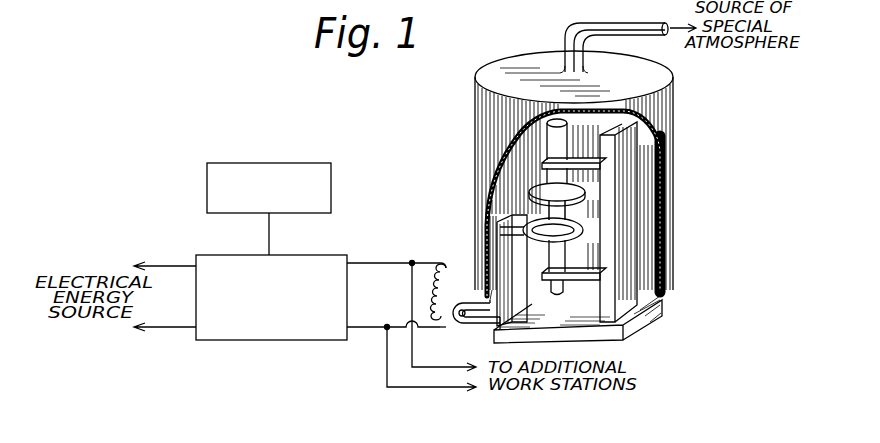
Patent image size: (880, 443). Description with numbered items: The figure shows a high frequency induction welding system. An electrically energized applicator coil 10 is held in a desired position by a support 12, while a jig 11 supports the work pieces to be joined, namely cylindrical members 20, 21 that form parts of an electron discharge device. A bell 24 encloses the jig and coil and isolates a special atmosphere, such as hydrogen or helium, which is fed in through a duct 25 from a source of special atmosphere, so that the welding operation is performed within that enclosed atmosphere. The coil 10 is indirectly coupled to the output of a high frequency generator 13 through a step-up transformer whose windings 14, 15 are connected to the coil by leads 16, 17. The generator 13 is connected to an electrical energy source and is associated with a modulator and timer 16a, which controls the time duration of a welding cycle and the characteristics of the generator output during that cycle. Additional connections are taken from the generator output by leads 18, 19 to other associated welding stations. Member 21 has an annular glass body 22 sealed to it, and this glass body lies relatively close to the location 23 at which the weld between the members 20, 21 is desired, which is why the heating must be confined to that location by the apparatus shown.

The applicator coil 10 is at (573, 221).
The jig 11 is at (641, 257).
The support 12 is at (535, 217).
The high frequency generator 13 is at (208, 341).
The winding 14 is at (442, 264).
The winding 15 is at (458, 329).
The lead 16 is at (486, 300).
The modulator and timer 16a is at (257, 163).
The lead 17 is at (493, 331).
The lead 18 is at (412, 360).
The lead 19 is at (387, 381).
The cylindrical member 20 is at (573, 242).
The cylindrical member 21 is at (580, 196).
The annular glass body 22 is at (538, 188).
The weld location 23 is at (564, 226).
The bell 24 is at (672, 118).
The duct 25 is at (612, 22).